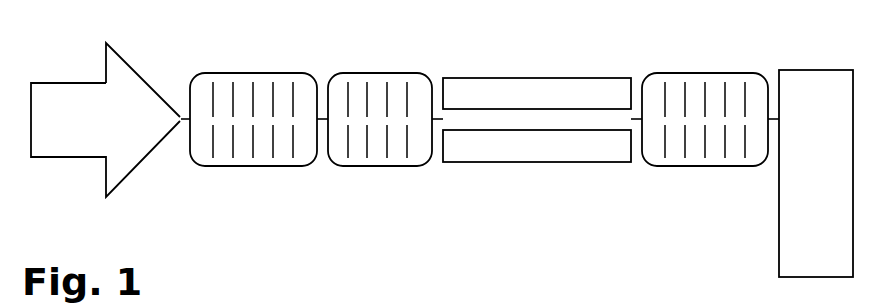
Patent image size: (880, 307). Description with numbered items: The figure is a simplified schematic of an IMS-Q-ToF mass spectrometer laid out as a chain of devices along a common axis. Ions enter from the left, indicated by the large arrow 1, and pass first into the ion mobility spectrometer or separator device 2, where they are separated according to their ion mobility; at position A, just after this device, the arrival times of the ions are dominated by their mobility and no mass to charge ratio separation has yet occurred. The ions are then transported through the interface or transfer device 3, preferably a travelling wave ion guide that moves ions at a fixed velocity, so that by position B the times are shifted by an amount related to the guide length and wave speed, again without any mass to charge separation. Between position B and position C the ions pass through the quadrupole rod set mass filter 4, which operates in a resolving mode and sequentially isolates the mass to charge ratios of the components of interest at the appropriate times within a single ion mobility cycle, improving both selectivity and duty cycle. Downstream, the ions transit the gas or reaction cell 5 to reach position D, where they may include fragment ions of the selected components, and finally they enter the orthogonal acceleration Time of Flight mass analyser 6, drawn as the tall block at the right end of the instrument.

The light/input arrow (incident radiation) 1 is at (122, 150).
The ion mobility separator 2 is at (283, 145).
The interface or transfer device 3 is at (397, 97).
The quadrupole rod set mass filter 4 is at (580, 147).
The gas or reaction cell 5 is at (698, 93).
The orthogonal acceleration Time of Flight mass analyser 6 is at (818, 98).
The position A is at (319, 167).
The position B is at (432, 167).
The position C is at (641, 164).
The position D is at (764, 171).